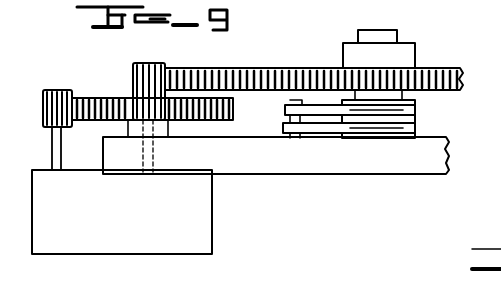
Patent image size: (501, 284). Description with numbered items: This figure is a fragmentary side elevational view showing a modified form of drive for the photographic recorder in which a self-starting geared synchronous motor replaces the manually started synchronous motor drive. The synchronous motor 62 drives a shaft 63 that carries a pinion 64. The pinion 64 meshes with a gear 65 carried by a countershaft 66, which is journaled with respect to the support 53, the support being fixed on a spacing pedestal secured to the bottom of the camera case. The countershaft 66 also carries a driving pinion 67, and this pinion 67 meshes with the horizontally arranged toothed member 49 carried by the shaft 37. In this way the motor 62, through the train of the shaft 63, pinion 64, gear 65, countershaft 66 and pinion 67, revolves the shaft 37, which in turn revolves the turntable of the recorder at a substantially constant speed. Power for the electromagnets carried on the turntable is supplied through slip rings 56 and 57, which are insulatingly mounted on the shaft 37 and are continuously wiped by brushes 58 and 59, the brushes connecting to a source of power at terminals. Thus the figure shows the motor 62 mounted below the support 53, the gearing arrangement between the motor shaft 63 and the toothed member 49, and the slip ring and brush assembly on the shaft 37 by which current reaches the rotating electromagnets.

The shaft 37 is at (385, 40).
The toothed member 49 is at (440, 73).
The support 53 is at (388, 167).
The slip ring 56 is at (417, 108).
The slip ring 57 is at (417, 132).
The brush 58 is at (331, 106).
The brush 59 is at (334, 98).
The synchronous motor 62 is at (202, 237).
The shaft 63 is at (50, 139).
The pinion 64 is at (43, 98).
The gear 65 is at (102, 97).
The countershaft 66 is at (163, 127).
The pinion 67 is at (155, 63).